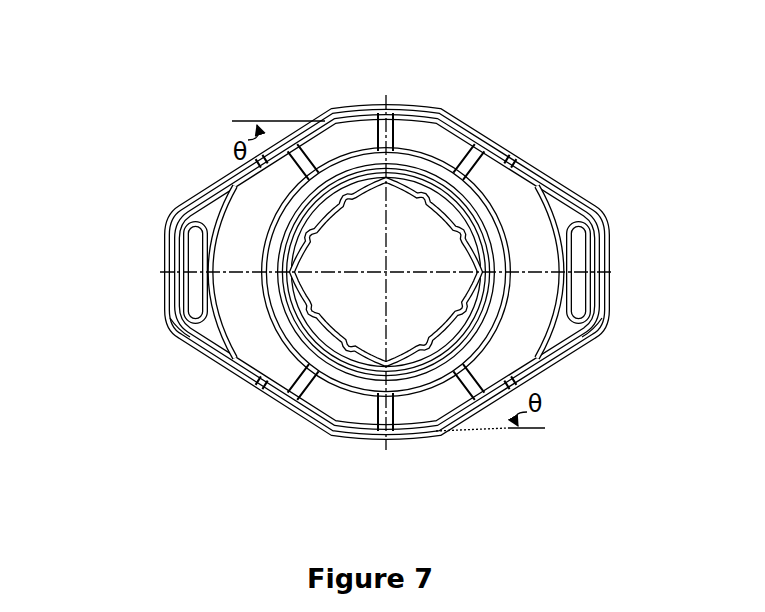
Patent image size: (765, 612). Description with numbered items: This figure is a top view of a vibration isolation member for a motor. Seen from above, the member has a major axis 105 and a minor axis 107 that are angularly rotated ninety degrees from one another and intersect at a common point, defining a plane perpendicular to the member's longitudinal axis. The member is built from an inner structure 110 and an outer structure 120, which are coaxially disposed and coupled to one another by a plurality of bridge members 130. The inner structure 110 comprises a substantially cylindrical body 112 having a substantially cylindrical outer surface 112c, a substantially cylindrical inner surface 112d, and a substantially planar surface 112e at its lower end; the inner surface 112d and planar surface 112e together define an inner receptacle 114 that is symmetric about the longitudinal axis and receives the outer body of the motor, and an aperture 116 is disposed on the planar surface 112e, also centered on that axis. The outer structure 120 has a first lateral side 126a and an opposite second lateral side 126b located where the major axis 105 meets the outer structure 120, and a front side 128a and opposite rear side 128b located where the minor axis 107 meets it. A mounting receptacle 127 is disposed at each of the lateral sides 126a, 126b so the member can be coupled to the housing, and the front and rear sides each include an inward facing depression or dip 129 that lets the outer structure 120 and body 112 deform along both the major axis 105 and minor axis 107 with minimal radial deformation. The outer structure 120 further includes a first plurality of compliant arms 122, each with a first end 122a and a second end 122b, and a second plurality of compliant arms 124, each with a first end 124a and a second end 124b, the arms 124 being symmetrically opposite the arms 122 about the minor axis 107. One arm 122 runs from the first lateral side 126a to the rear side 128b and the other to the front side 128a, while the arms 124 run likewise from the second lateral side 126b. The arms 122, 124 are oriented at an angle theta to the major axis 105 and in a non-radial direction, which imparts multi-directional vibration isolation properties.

The major axis 105 is at (250, 272).
The minor axis 107 is at (395, 142).
The inner structure 110 is at (497, 200).
The cylindrical body 112 is at (272, 338).
The cylindrical outer surface 112c is at (448, 431).
The cylindrical inner surface 112d is at (298, 390).
The planar surface 112e is at (313, 223).
The inner receptacle 114 is at (457, 200).
The aperture 116 is at (475, 241).
The outer structure 120 is at (478, 122).
The first plurality of compliant arms 122 is at (212, 190).
The first end 122a is at (190, 207).
The second end 122b is at (316, 108).
The second plurality of compliant arms 124 is at (566, 187).
The first end 124a is at (599, 214).
The second end 124b is at (458, 110).
The first lateral side 126a is at (168, 283).
The second lateral side 126b is at (610, 275).
The mounting receptacle 127 is at (185, 322).
The front side 128a is at (395, 443).
The rear side 128b is at (377, 107).
The inward facing depression or dip 129 is at (399, 104).
The bridge members 130 is at (310, 323).